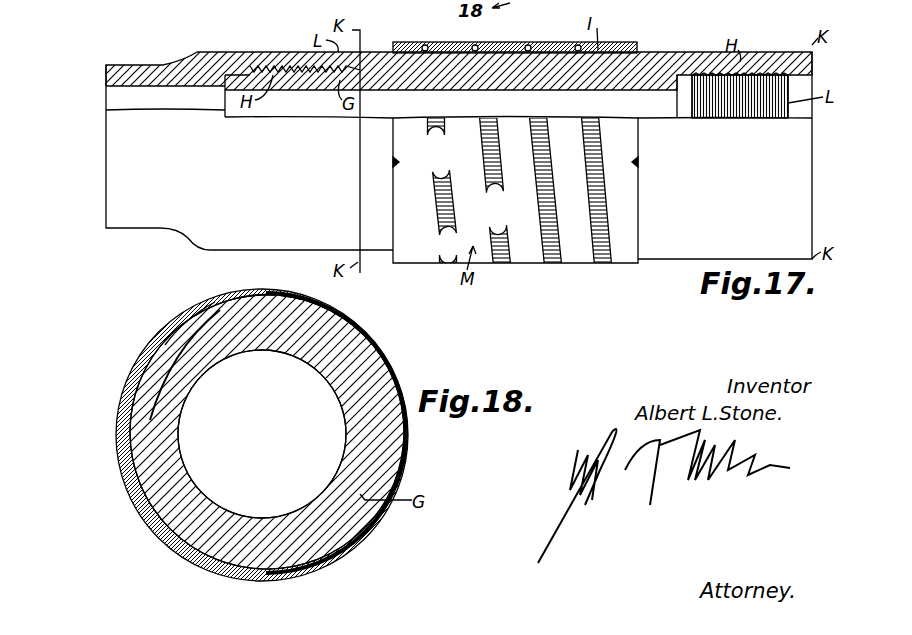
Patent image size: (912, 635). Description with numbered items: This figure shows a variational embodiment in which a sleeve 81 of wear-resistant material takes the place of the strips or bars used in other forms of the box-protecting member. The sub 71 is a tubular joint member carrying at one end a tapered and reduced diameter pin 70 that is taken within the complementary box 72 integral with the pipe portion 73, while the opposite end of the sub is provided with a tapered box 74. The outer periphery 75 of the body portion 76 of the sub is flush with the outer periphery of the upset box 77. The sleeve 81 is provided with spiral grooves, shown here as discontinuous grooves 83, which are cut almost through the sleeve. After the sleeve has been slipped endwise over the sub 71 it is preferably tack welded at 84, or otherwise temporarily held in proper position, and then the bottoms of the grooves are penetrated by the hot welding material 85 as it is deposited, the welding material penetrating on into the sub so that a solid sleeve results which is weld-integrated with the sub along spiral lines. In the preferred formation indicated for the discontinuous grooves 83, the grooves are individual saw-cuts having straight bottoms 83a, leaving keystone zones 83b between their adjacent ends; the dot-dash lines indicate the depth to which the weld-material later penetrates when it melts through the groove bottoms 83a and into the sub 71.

In FIG. 17, the pin 70 is at (285, 78).
In FIG. 17, the sub 71 is at (658, 248).
In FIG. 18, the sub 71 is at (333, 380).
In FIG. 17, the box 72 is at (298, 56).
In FIG. 17, the pipe portion 73 is at (140, 70).
In FIG. 17, the tapered box 74 is at (742, 90).
In FIG. 17, the outer periphery 75 is at (665, 53).
In FIG. 18, the outer periphery 75 is at (409, 438).
In FIG. 17, the body portion 76 is at (495, 82).
In FIG. 18, the body portion 76 is at (363, 423).
In FIG. 17, the upset box 77 is at (252, 50).
In FIG. 17, the sleeve 81 is at (637, 22).
In FIG. 18, the sleeve 81 is at (336, 312).
In FIG. 18, the discontinuous spiral grooves 83 is at (273, 292).
In FIG. 18, the straight bottoms 83a is at (265, 270).
In FIG. 18, the keystone zones 83b is at (190, 310).
In FIG. 17, the tack weld 84 is at (392, 162).
In FIG. 17, the welding material 85 is at (488, 186).